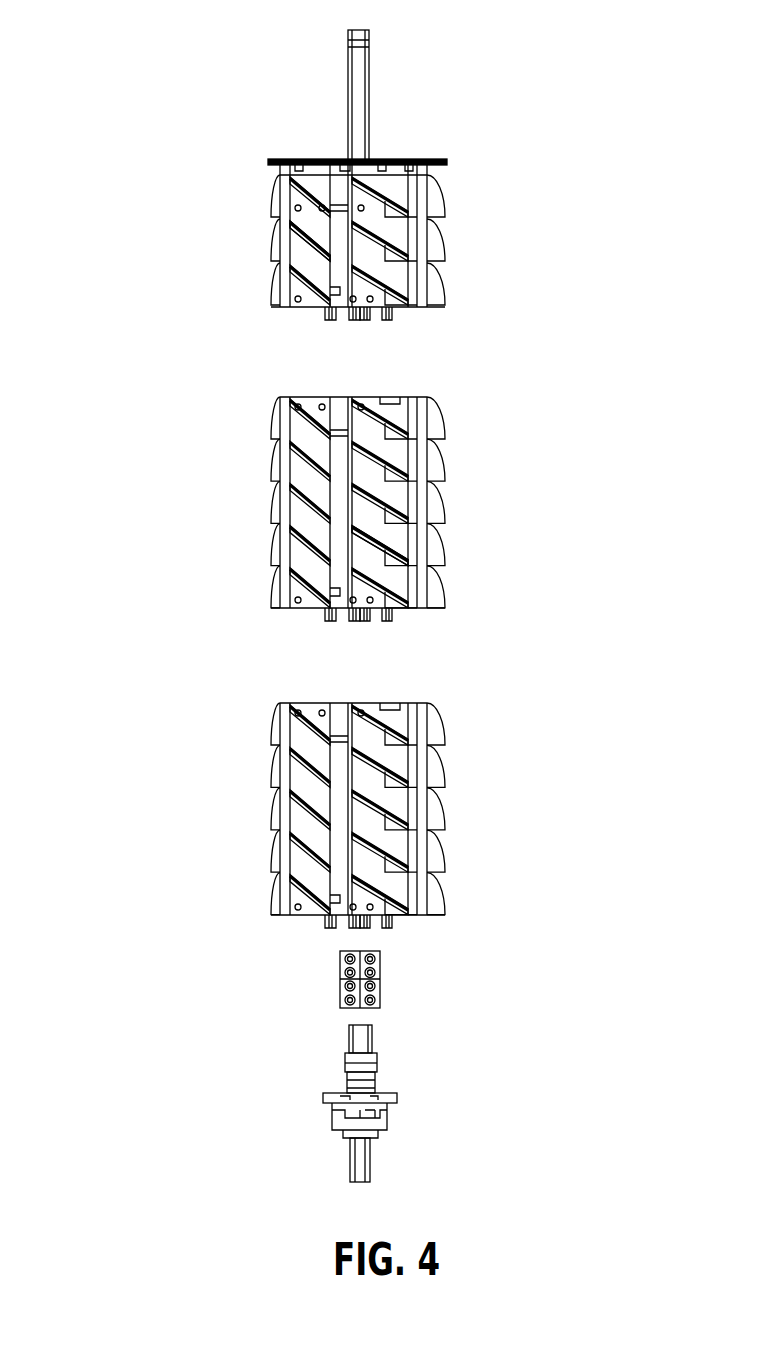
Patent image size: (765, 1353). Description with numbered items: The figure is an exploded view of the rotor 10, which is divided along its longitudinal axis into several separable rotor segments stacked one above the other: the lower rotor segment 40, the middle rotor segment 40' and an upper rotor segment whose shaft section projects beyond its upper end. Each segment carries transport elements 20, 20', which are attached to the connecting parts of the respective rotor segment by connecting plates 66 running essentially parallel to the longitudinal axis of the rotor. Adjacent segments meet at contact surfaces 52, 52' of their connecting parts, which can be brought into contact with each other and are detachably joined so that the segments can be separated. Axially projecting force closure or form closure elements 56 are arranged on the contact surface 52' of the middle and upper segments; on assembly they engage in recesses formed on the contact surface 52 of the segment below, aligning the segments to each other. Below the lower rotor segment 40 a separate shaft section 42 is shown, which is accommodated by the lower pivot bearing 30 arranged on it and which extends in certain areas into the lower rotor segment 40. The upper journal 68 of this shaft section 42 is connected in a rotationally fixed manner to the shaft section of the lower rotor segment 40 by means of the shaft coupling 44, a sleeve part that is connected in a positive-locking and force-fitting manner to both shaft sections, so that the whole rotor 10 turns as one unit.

The rotor 10 is at (146, 652).
The connecting plate 66 is at (300, 252).
The form closure element 56 is at (392, 312).
The transport element 20' is at (248, 502).
The rotor segment 40' is at (376, 502).
The contact surface 52' is at (336, 633).
The contact surface 52 is at (325, 683).
The transport element 20 is at (236, 809).
The lower rotor segment 40 is at (353, 815).
The shaft coupling 44 is at (380, 978).
The upper journal 68 is at (372, 1035).
The lower pivot bearing 30 is at (332, 1118).
The shaft section 42 is at (370, 1145).